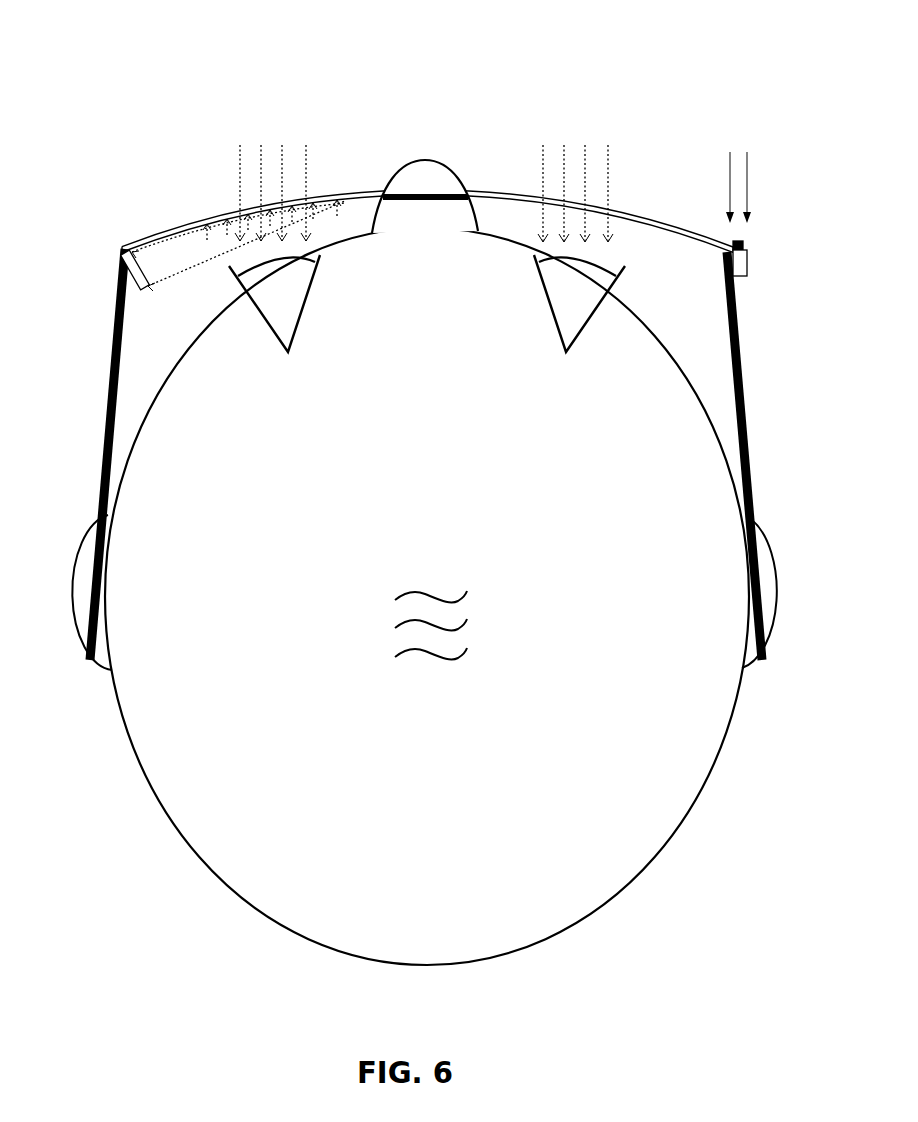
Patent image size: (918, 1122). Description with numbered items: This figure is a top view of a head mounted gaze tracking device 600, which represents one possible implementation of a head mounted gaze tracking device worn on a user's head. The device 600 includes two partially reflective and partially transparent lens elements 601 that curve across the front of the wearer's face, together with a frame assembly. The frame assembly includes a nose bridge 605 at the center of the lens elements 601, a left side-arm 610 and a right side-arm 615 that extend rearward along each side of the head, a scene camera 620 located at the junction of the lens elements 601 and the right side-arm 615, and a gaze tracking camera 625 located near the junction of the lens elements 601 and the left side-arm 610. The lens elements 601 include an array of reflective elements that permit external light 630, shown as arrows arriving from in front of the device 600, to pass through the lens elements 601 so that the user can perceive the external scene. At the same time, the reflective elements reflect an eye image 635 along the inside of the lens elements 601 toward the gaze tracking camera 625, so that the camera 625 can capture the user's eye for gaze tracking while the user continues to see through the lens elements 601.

The head mounted gaze tracking device 600 is at (723, 60).
The lens elements 601 is at (143, 237).
The nose bridge 605 is at (440, 195).
The left side-arm 610 is at (103, 452).
The right side-arm 615 is at (748, 457).
The scene camera 620 is at (747, 262).
The gaze tracking camera 625 is at (122, 293).
The external light 630 is at (306, 160).
The eye image 635 is at (187, 243).